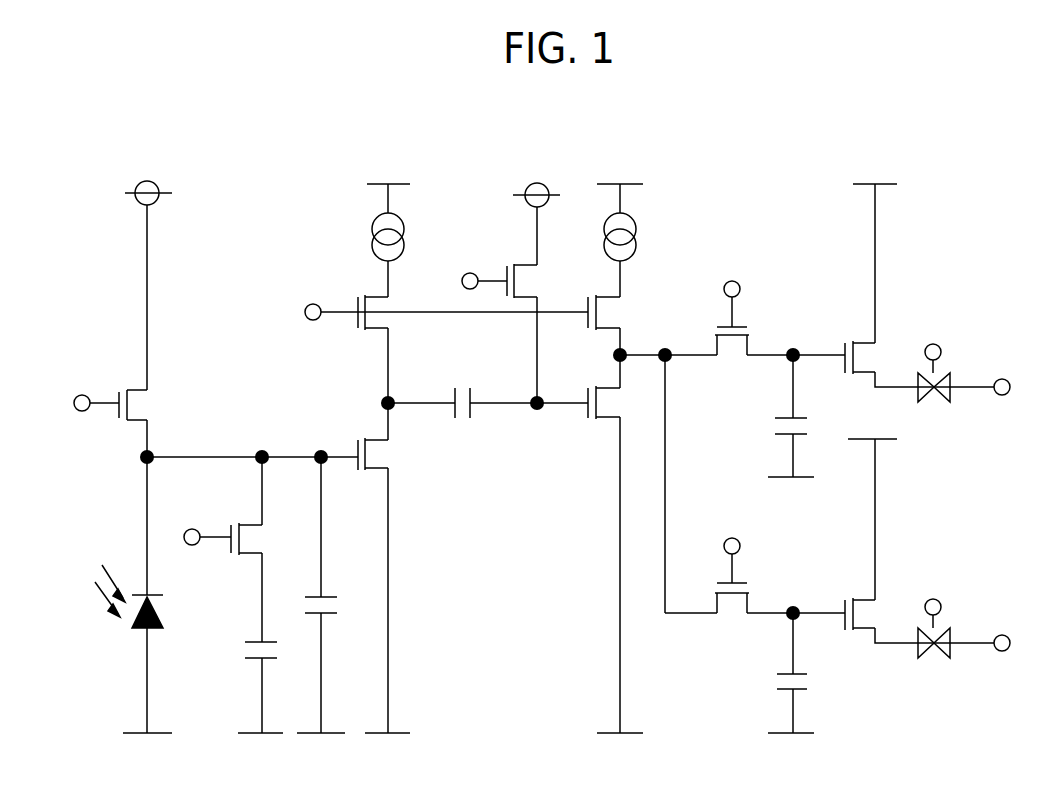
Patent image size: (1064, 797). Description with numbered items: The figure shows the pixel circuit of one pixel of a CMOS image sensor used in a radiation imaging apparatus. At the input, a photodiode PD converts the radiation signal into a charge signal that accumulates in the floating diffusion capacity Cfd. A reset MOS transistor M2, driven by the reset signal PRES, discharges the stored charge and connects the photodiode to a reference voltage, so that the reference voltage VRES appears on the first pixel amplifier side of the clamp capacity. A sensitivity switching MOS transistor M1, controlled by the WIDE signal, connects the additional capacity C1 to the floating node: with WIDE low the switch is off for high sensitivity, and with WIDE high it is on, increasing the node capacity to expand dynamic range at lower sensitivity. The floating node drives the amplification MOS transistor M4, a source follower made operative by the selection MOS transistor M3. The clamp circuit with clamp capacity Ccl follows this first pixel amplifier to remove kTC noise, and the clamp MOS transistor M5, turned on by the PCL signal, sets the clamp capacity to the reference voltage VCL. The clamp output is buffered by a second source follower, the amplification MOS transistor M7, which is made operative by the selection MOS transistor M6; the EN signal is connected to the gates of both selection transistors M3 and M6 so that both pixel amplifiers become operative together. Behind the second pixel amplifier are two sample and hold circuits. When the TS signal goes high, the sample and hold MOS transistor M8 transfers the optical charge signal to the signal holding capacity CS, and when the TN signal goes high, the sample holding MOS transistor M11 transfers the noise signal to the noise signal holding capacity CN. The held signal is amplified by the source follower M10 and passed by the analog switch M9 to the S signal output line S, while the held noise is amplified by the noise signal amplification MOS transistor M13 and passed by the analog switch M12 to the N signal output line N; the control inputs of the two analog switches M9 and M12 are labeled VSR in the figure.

The reference voltage VRES is at (146, 176).
The reset signal PRES is at (88, 385).
The reset MOS transistor M2 is at (147, 405).
The photodiode PD is at (145, 596).
The WIDE signal WIDE is at (198, 520).
The sensitivity switching MOS transistor M1 is at (259, 538).
The capacity for expanding dynamic range C1 is at (245, 650).
The floating diffusion capacity Cfd is at (306, 589).
The EN signal EN is at (313, 295).
The selection MOS transistor M3 is at (388, 280).
The amplification MOS transistor M4 is at (388, 454).
The clamp capacity Ccl is at (461, 420).
The reference voltage VCL is at (536, 177).
The PCL signal PCL is at (462, 280).
The clamp MOS transistor M5 is at (537, 281).
The selection MOS transistor M6 is at (619, 272).
The amplification MOS transistor M7 is at (619, 402).
The TS signal TS is at (732, 287).
The sample and hold MOS transistor M8 is at (732, 359).
The signal holding capacity CS is at (800, 409).
The amplification MOS transistor M10 is at (850, 342).
The row select signal terminal VSR is at (934, 469).
The analog switch M9 is at (934, 403).
The S signal output line S is at (1012, 387).
The TN signal TN is at (732, 542).
The sample holding MOS transistor M11 is at (733, 617).
The noise signal holding capacity CN is at (801, 662).
The noise signal amplification MOS transistor M13 is at (850, 598).
The analog switch M12 is at (937, 660).
The N signal output line N is at (1013, 645).